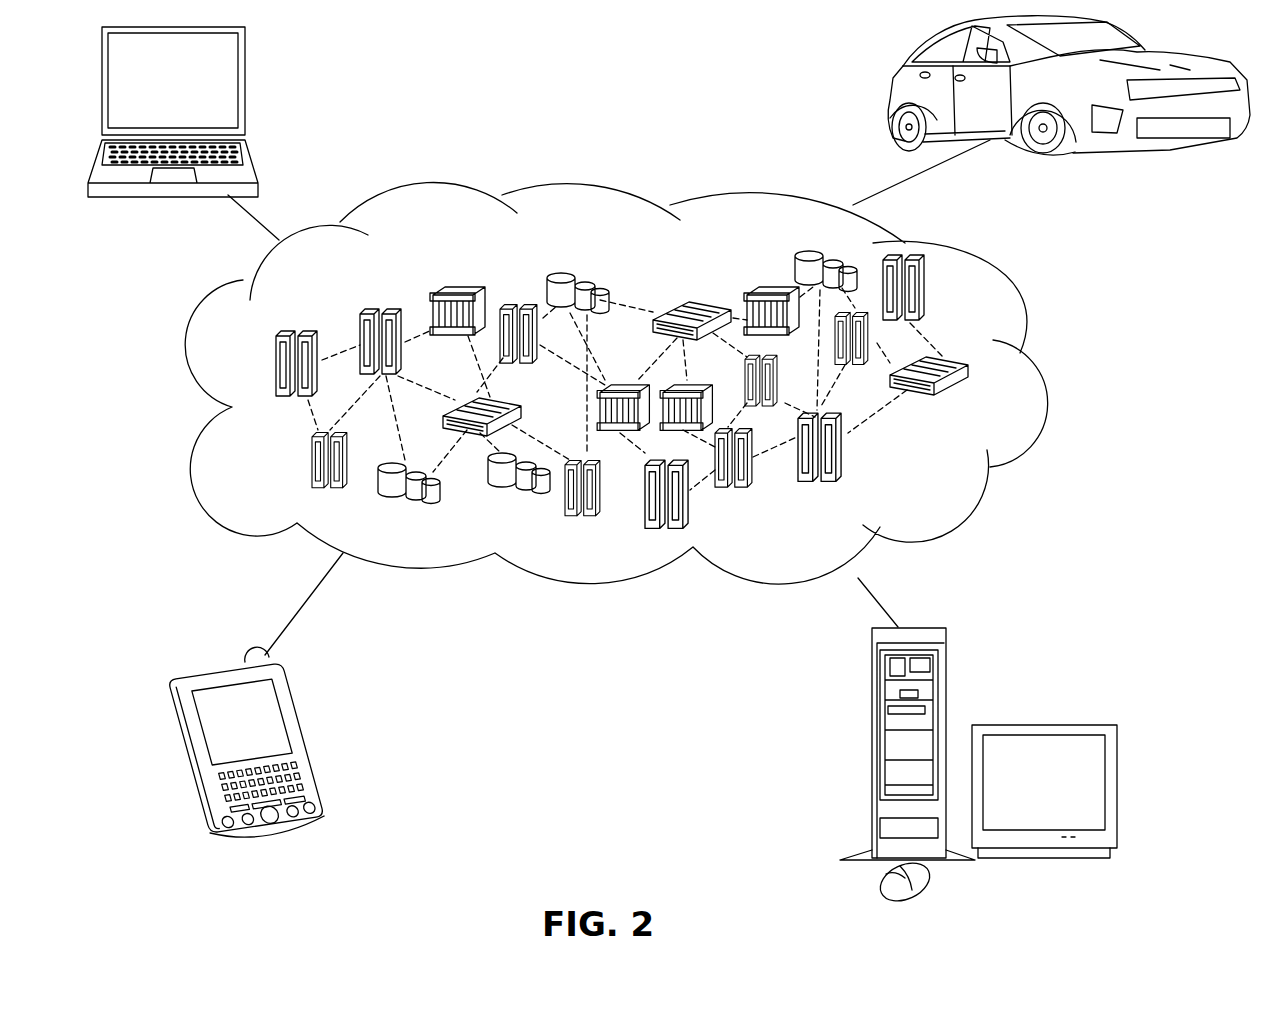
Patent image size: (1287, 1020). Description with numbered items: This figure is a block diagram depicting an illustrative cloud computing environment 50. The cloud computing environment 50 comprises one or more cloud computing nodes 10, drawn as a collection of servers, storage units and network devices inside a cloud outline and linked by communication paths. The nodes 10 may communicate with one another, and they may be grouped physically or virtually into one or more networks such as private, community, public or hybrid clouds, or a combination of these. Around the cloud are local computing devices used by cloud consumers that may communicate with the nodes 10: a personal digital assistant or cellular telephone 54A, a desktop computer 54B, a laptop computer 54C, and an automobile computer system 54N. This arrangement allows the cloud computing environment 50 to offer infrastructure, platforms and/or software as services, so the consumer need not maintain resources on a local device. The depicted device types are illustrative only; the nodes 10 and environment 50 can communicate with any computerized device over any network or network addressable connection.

The cloud computing node 10 is at (946, 477).
The cloud computing environment 50 is at (1047, 375).
The personal digital assistant or cellular telephone 54A is at (298, 704).
The desktop computer 54B is at (870, 690).
The laptop computer 54C is at (245, 67).
The automobile computer system 54N is at (890, 83).